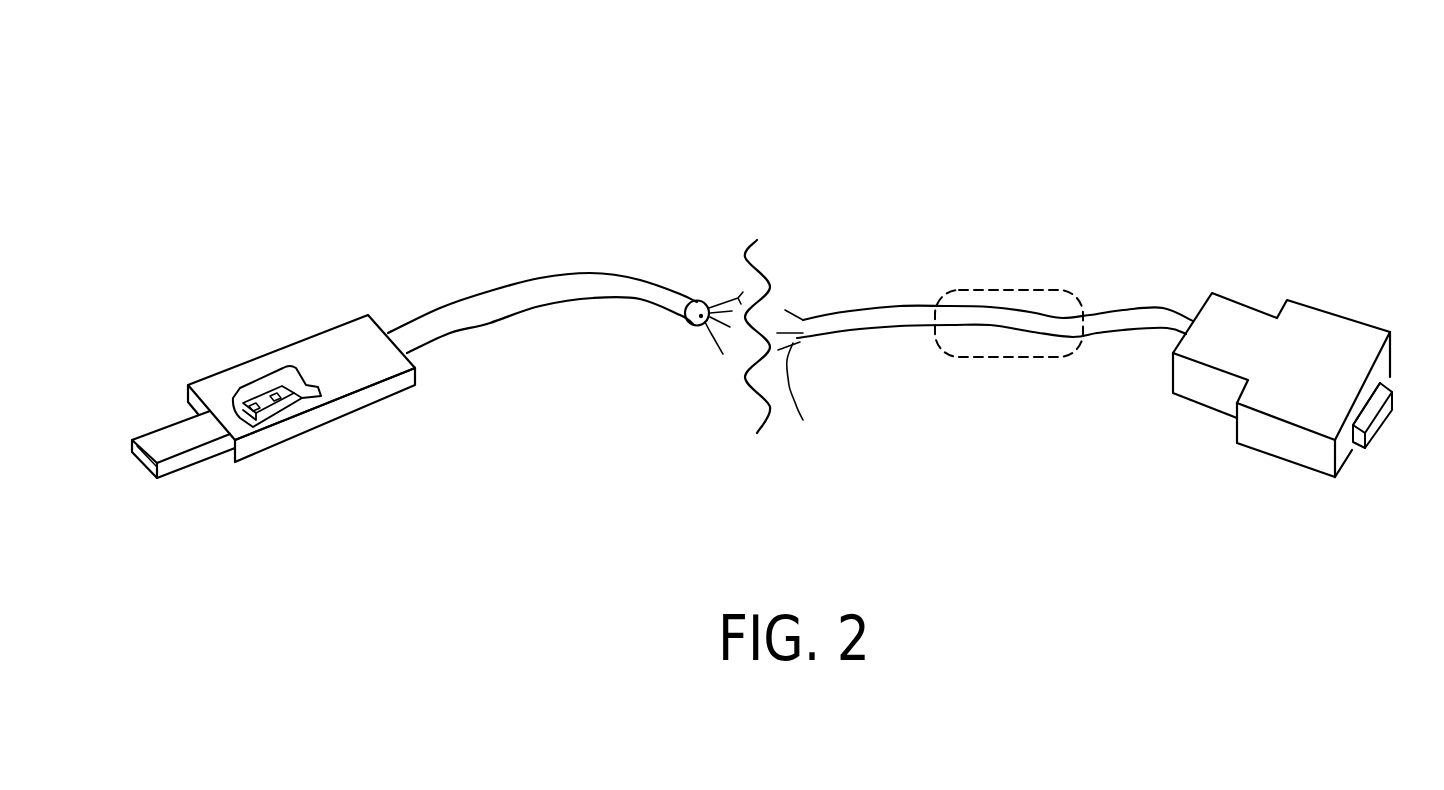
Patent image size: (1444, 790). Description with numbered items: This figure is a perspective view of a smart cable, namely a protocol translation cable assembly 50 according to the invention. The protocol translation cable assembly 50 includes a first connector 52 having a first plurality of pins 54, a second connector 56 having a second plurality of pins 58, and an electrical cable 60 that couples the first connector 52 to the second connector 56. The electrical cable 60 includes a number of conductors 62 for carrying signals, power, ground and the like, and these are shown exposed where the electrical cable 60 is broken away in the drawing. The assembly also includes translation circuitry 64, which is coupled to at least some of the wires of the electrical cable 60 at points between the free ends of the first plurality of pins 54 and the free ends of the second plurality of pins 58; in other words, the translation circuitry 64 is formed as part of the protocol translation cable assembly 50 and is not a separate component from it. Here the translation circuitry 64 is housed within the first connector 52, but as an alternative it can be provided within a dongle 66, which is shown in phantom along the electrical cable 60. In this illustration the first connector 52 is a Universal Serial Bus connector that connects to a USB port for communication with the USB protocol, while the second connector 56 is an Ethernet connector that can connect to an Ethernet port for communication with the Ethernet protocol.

The protocol translation cable assembly 50 is at (893, 133).
The first connector 52 is at (324, 350).
The first plurality of pins 54 is at (143, 468).
The second connector 56 is at (1310, 338).
The second plurality of pins 58 is at (1378, 417).
The electrical cable 60 is at (588, 283).
The conductors 62 is at (792, 347).
The translation circuitry 64 is at (263, 392).
The dongle 66 is at (1003, 300).